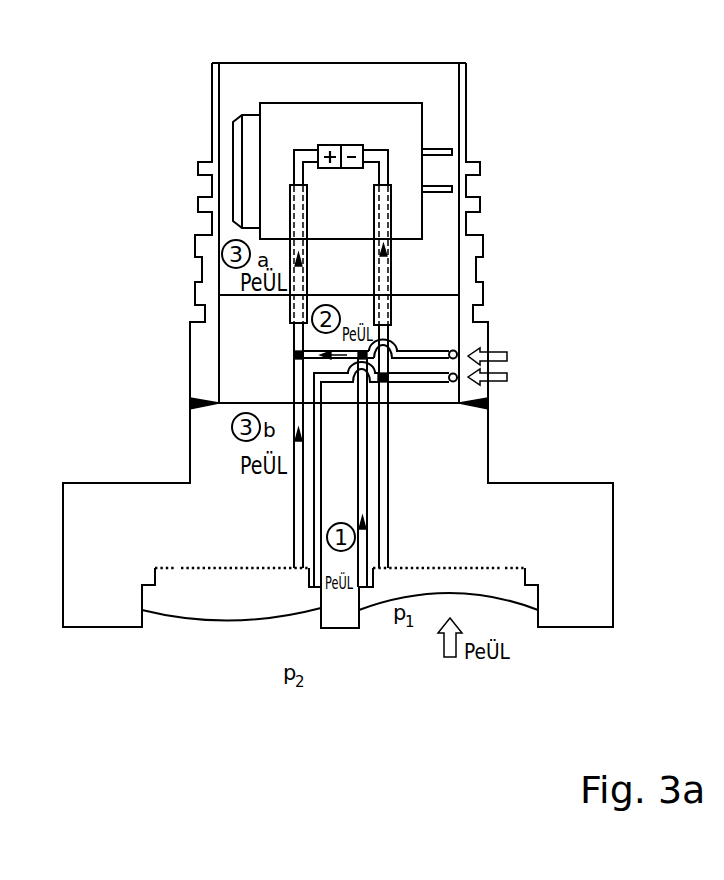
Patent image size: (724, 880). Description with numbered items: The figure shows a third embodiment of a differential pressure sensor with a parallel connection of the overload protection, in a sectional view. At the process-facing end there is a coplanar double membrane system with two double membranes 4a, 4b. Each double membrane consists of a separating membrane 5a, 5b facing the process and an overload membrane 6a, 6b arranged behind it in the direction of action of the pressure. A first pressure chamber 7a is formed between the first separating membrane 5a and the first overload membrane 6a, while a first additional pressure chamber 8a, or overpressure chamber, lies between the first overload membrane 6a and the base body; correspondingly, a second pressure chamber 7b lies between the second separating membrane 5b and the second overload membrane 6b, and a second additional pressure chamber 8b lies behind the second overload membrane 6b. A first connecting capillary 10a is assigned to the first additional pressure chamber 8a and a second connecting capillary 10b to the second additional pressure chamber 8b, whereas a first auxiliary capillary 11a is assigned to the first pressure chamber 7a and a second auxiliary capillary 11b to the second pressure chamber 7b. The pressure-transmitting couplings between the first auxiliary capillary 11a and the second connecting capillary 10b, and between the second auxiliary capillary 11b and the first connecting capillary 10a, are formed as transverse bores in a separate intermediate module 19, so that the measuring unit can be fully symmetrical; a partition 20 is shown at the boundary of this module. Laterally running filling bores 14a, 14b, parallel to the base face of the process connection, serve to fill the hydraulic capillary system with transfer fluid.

The intermediate module 19 is at (233, 347).
The partition wall 20 is at (488, 404).
The first connecting capillary 10a is at (293, 545).
The second connecting capillary 10b is at (391, 443).
The first auxiliary capillary 11a is at (312, 510).
The second auxiliary capillary 11b is at (370, 467).
The first filling bore 14a is at (415, 349).
The second filling bore 14b is at (415, 385).
The first double membrane 4a is at (233, 501).
The second double membrane 4b is at (347, 603).
The first separating membrane 5a is at (210, 624).
The second separating membrane 5b is at (430, 601).
The first overload membrane 6a is at (192, 561).
The second overload membrane 6b is at (445, 561).
The first pressure chamber 7a is at (170, 602).
The second pressure chamber 7b is at (515, 592).
The first additional pressure chamber 8a is at (166, 562).
The second additional pressure chamber 8b is at (506, 562).